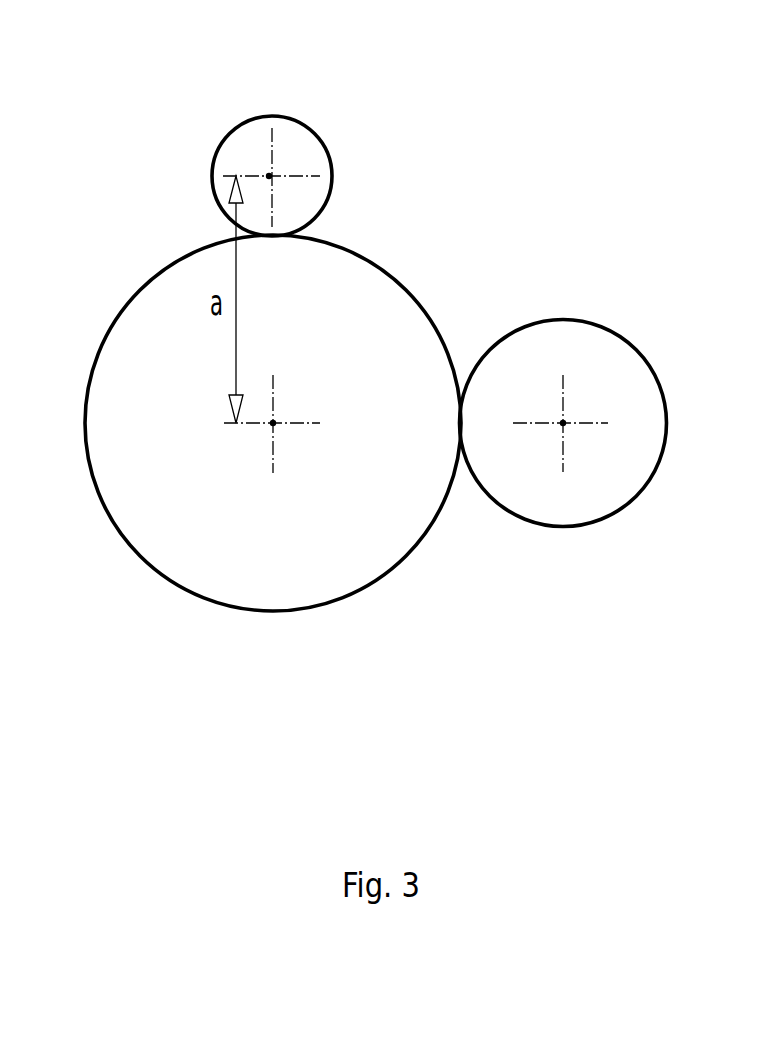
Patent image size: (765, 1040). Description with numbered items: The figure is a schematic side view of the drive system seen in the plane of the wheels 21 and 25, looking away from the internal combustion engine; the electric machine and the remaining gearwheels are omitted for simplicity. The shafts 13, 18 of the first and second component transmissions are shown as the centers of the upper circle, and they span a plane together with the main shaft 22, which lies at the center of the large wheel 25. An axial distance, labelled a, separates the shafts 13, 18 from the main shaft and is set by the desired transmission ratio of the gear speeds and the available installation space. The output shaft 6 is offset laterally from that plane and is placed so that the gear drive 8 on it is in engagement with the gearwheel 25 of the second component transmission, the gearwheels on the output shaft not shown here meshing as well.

The output shaft 6 is at (563, 423).
The gear drive 8 is at (645, 365).
The shaft of the first component transmission 13 is at (196, 160).
The shaft of the second component transmission 18 is at (268, 175).
The wheel 21 is at (255, 122).
The main shaft 22 is at (273, 423).
The gearwheel of the second component transmission 25 is at (353, 591).